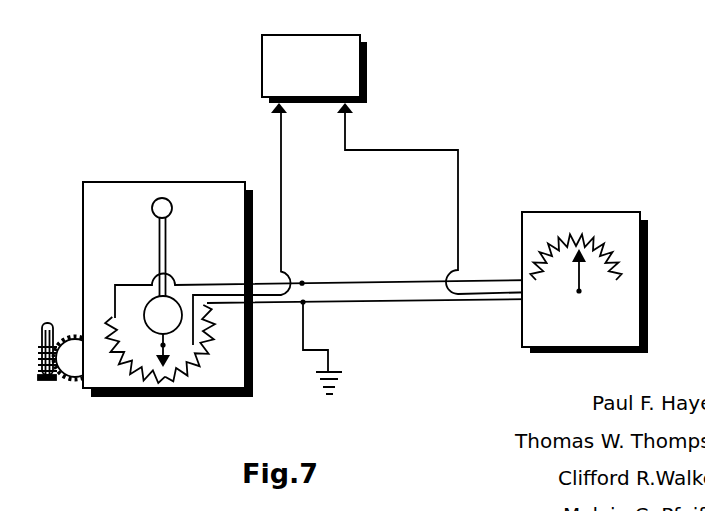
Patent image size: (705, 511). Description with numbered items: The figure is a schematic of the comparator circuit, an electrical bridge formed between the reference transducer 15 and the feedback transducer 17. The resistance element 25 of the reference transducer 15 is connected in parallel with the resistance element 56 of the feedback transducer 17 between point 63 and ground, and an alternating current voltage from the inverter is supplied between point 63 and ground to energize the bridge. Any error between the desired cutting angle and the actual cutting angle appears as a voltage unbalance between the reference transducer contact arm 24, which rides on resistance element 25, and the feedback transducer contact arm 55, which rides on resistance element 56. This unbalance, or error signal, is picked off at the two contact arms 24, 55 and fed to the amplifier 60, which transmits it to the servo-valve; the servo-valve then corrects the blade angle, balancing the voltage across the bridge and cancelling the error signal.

The reference transducer 15 is at (115, 377).
The feedback transducer 17 is at (630, 250).
The reference transducer contact arm 24 is at (160, 336).
The resistance element 25 is at (188, 378).
The feedback transducer contact arm 55 is at (582, 289).
The resistance element 56 is at (605, 243).
The amplifier 60 is at (353, 45).
The point 63 is at (303, 283).